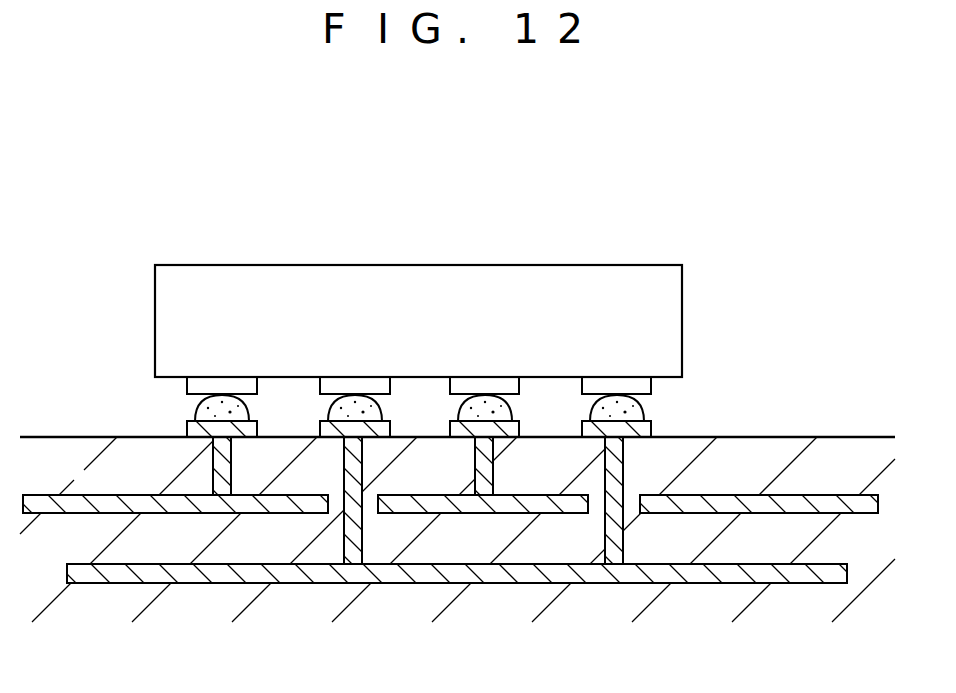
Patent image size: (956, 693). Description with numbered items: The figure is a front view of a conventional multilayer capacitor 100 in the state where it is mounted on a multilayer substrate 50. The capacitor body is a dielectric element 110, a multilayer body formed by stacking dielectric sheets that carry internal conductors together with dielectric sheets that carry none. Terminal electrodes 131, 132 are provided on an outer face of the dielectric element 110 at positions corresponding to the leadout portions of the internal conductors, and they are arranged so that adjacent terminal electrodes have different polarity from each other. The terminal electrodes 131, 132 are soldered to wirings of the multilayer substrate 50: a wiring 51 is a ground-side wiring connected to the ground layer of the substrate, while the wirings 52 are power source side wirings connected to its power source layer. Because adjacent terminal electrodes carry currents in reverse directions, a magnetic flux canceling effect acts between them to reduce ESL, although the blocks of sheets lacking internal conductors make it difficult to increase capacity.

The multilayer capacitor 100 is at (693, 248).
The dielectric element 110 is at (684, 308).
The terminal electrode 131 is at (391, 384).
The terminal electrode 132 is at (258, 384).
The multilayer substrate 50 is at (772, 438).
The wiring 51 is at (732, 583).
The wiring 52 is at (105, 495).